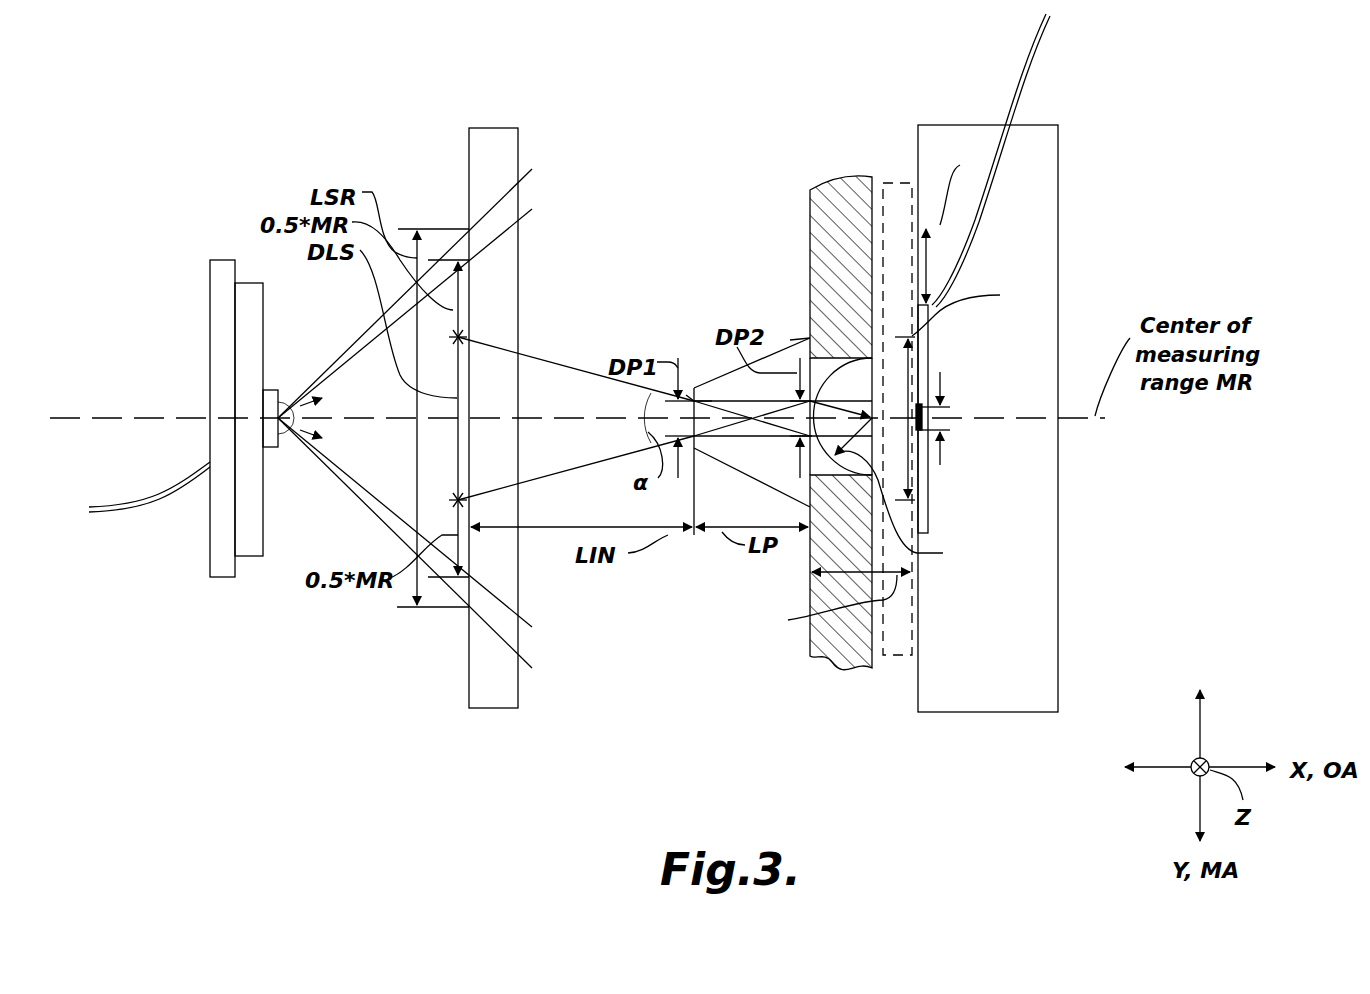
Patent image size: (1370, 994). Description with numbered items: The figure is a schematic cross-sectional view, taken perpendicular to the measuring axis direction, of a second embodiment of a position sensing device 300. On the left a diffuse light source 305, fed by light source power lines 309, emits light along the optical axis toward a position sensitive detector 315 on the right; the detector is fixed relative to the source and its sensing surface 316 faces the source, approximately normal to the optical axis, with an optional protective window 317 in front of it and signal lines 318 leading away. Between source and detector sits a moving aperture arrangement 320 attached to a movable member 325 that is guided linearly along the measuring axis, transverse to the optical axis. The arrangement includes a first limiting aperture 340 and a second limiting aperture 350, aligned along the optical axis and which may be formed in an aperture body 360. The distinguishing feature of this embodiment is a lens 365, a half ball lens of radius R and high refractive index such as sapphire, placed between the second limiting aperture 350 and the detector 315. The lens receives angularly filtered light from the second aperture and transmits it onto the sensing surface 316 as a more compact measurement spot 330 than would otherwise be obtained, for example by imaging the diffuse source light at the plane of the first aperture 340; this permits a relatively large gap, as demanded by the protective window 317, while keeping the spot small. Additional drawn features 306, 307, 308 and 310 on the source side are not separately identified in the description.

The position sensing device 300 is at (1194, 93).
The diffuse light source 305 is at (417, 76).
The light source housing 306 is at (273, 330).
The light emitter 307 is at (292, 470).
The collimating lens 308 is at (469, 142).
The light source power lines 309 is at (130, 515).
The light beam 310 is at (557, 277).
The position sensitive detector 315 is at (968, 130).
The sensing surface 316 is at (929, 483).
The protective window 317 is at (893, 182).
The signal lines 318 is at (1027, 67).
The moving aperture arrangement 320 is at (685, 80).
The movable member 325 is at (835, 180).
The measurement spot 330 is at (925, 428).
The first limiting aperture 340 is at (712, 400).
The second limiting aperture 350 is at (810, 335).
The aperture body 360 is at (690, 400).
The lens 365 is at (838, 356).